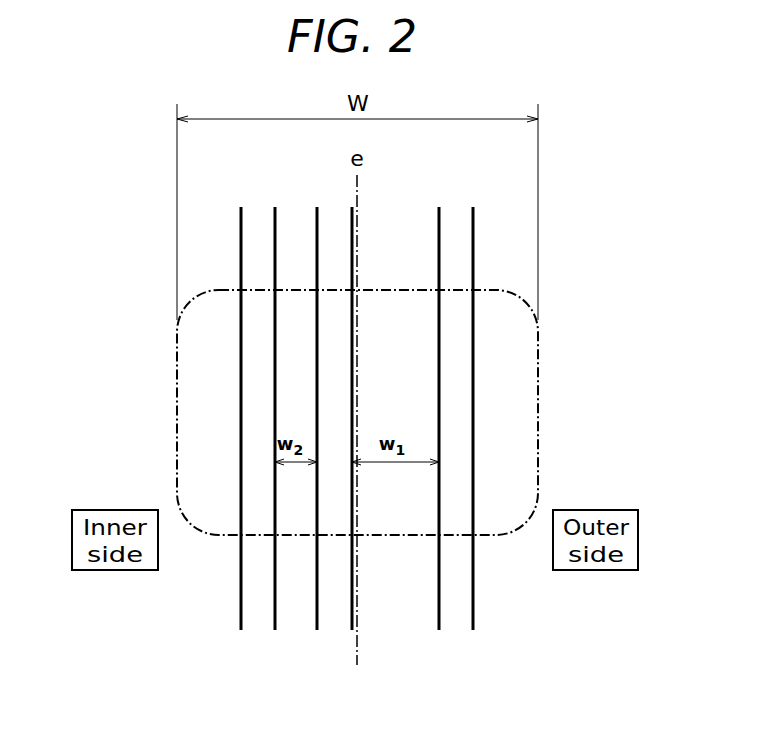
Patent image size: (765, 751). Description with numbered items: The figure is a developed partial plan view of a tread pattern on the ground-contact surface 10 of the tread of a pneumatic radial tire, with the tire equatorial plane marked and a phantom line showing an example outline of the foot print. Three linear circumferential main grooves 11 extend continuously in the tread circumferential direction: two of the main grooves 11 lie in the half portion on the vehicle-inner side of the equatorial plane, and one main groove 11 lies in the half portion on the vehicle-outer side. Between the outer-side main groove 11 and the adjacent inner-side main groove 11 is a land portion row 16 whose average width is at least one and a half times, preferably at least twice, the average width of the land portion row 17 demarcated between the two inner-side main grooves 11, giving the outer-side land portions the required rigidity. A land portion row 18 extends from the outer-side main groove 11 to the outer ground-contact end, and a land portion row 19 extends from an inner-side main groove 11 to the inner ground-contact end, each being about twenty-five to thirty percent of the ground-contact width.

The ground-contact surface 10 is at (388, 545).
The circumferential main groove 11 is at (258, 372).
The land portion row 16 is at (395, 318).
The land portion row 17 is at (296, 318).
The land portion row 18 is at (498, 327).
The land portion row 19 is at (212, 318).